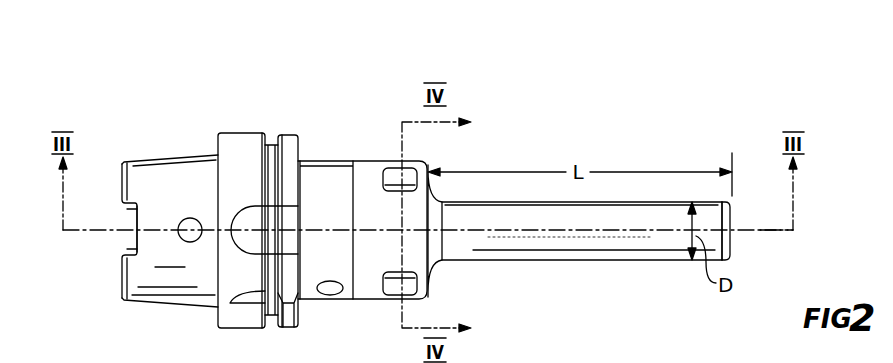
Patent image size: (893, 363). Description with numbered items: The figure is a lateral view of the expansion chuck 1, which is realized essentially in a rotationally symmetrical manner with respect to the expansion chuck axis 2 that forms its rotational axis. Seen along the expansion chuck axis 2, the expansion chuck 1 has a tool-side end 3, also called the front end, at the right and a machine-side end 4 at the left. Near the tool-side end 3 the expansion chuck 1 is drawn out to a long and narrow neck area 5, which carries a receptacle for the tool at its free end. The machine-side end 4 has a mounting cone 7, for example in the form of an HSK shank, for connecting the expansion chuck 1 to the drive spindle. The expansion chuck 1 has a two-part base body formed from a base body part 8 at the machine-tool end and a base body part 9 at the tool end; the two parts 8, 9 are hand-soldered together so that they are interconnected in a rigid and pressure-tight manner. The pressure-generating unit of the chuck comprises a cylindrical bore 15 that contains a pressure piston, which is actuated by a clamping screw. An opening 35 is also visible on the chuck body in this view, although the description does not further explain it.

The expansion chuck 1 is at (137, 44).
The expansion chuck axis 2 is at (780, 231).
The tool-side end 3 is at (740, 213).
The machine-side end 4 is at (122, 222).
The neck area 5 is at (595, 247).
The mounting cone 7 is at (159, 167).
The base body part 8 is at (253, 140).
The base body part 9 is at (458, 258).
The cylindrical bore 15 is at (417, 167).
The opening 35 is at (308, 298).